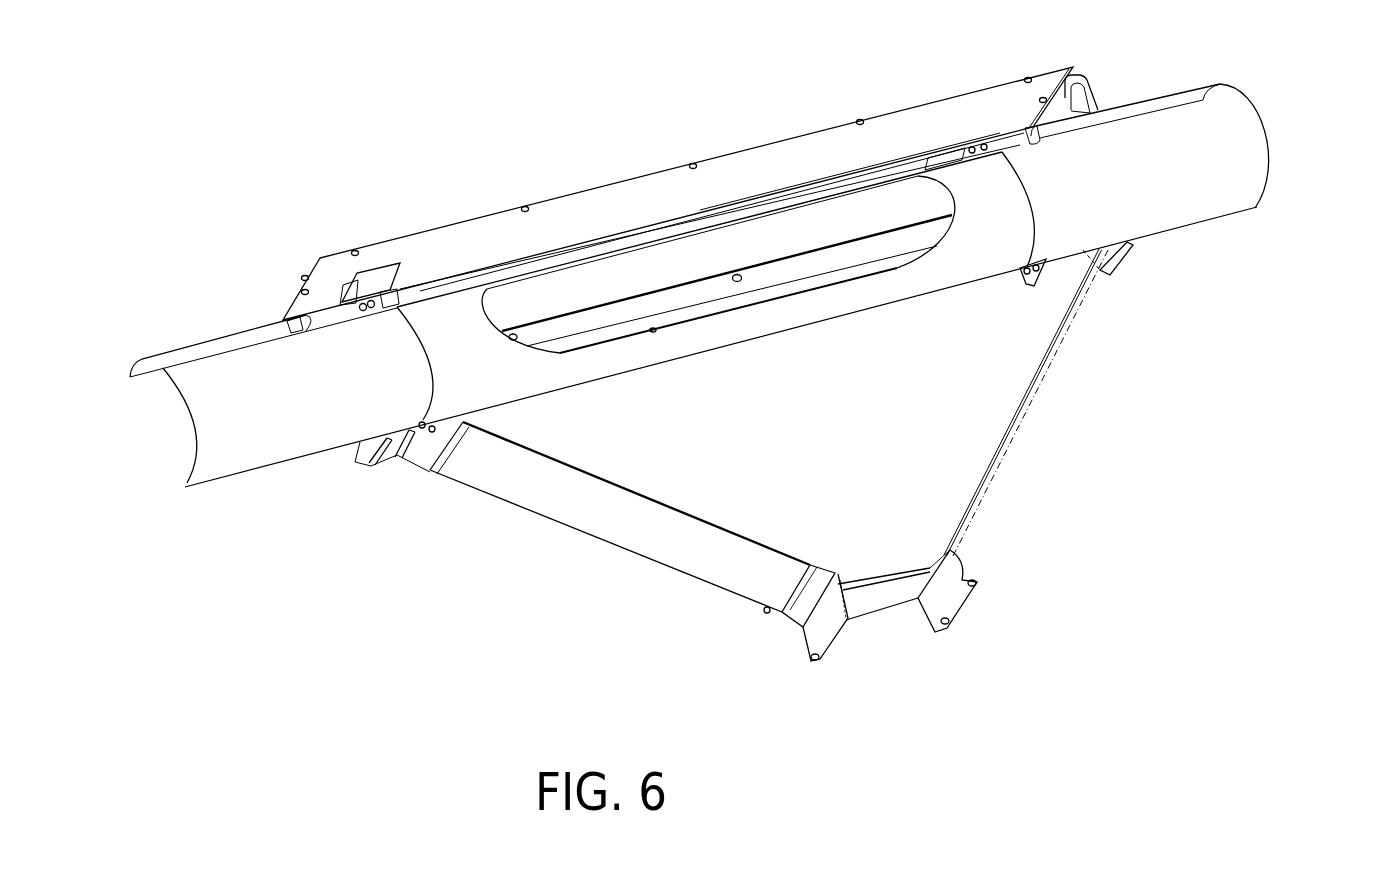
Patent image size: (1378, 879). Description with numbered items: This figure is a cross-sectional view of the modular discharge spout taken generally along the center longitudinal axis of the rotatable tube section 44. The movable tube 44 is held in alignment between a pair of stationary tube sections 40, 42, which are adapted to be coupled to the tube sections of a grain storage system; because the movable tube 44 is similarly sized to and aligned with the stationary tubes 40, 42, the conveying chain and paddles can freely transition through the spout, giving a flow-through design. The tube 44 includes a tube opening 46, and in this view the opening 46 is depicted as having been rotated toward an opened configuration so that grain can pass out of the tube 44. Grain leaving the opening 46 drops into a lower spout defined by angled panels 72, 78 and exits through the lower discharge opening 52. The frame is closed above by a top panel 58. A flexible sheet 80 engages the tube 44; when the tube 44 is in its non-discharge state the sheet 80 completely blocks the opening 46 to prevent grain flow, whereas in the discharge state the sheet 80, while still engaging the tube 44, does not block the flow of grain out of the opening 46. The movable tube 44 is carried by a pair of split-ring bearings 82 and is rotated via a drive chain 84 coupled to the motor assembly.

The stationary tube section 40 is at (182, 427).
The stationary tube section 42 is at (1257, 141).
The rotatable tube section 44 is at (487, 397).
The tube opening 46 is at (590, 338).
The lower discharge opening 52 is at (907, 644).
The top panel 58 is at (903, 118).
The angled panel 72 is at (633, 545).
The angled panel 78 is at (977, 427).
The flexible sheet 80 is at (660, 267).
The split-ring bearing 82 is at (427, 410).
The drive chain 84 is at (408, 287).